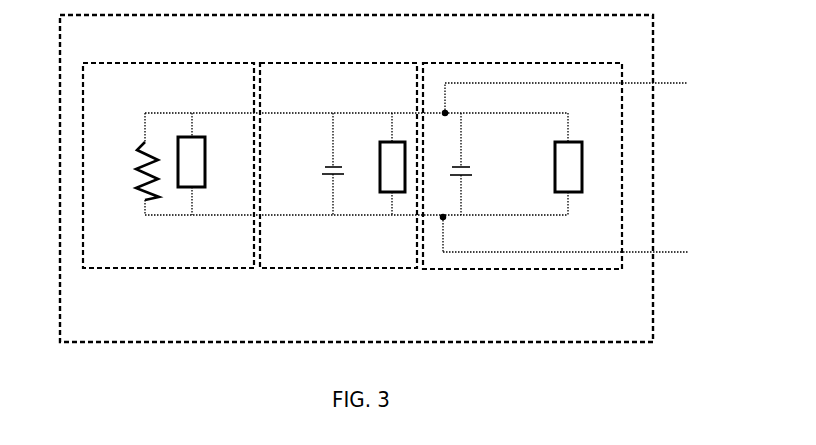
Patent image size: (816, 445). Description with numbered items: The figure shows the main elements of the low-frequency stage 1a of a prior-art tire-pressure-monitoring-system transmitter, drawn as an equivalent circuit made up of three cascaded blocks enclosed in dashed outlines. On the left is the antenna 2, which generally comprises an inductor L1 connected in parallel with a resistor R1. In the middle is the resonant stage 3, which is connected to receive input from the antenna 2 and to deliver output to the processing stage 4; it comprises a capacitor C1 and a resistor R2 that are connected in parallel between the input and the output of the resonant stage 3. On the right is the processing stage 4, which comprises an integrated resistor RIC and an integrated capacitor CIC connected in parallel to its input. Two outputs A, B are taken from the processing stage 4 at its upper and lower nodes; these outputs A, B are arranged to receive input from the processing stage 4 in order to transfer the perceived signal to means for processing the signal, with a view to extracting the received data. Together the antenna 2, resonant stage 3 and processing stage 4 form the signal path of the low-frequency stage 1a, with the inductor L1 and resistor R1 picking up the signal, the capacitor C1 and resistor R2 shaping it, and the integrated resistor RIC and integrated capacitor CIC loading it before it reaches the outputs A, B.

The low-frequency stage 1a is at (182, 343).
The antenna 2 is at (167, 270).
The resonant stage 3 is at (300, 271).
The processing stage 4 is at (548, 271).
The inductor L1 is at (133, 197).
The resistor R1 is at (208, 182).
The capacitor C1 is at (322, 177).
The resistor R2 is at (378, 178).
The integrated capacitor CIC is at (461, 176).
The integrated resistor RIC is at (552, 173).
The output A is at (573, 96).
The output B is at (571, 237).